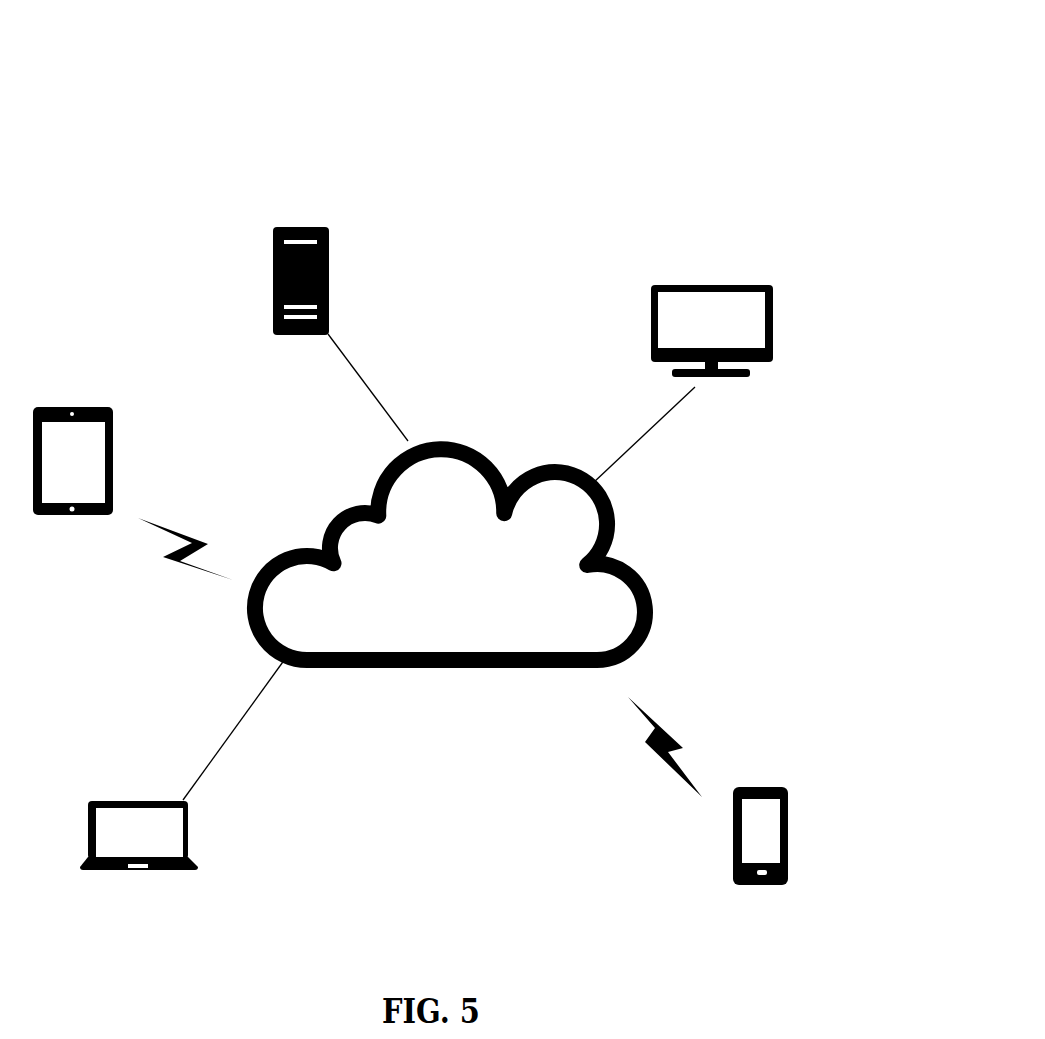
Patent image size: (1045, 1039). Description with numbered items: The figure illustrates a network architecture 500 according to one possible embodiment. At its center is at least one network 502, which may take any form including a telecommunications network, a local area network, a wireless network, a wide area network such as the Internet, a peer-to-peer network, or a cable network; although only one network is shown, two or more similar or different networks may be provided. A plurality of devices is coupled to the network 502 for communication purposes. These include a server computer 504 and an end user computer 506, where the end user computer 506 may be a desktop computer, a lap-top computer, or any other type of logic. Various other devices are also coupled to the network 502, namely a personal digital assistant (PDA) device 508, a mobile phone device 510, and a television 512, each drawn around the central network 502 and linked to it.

The network architecture 500 is at (76, 99).
The network 502 is at (458, 668).
The server computer 504 is at (300, 227).
The end user computer 506 is at (134, 800).
The personal digital assistant (PDA) device 508 is at (74, 407).
The mobile phone device 510 is at (752, 787).
The television 512 is at (715, 285).